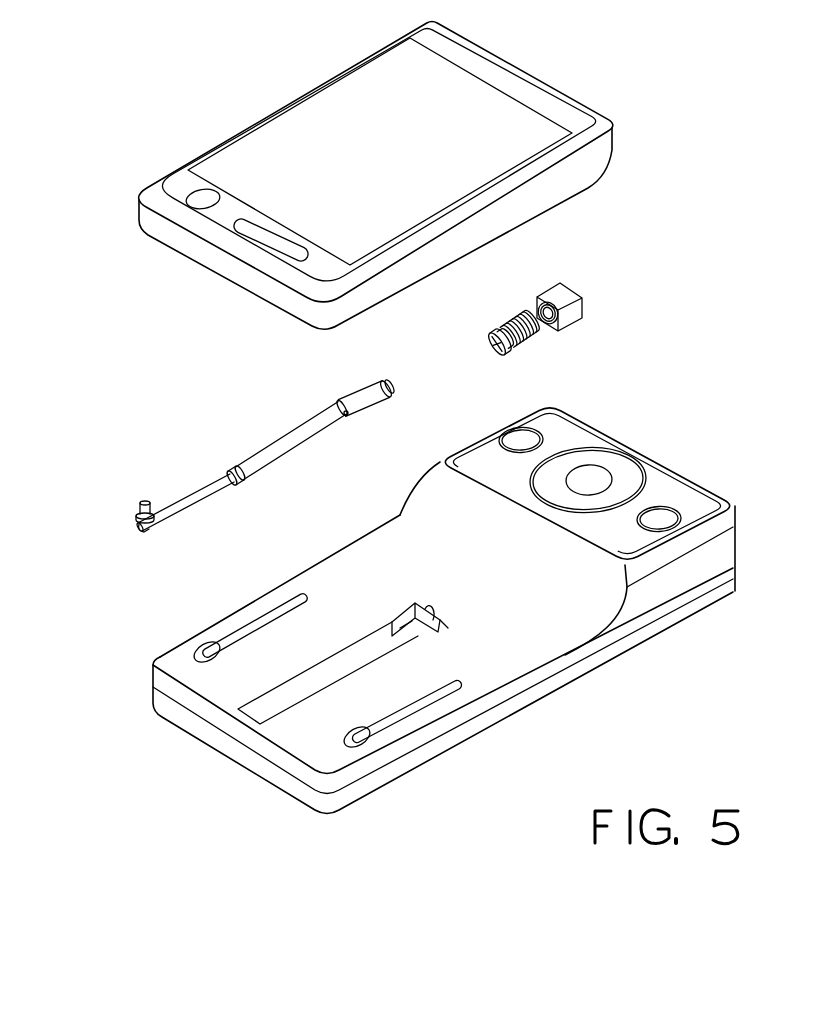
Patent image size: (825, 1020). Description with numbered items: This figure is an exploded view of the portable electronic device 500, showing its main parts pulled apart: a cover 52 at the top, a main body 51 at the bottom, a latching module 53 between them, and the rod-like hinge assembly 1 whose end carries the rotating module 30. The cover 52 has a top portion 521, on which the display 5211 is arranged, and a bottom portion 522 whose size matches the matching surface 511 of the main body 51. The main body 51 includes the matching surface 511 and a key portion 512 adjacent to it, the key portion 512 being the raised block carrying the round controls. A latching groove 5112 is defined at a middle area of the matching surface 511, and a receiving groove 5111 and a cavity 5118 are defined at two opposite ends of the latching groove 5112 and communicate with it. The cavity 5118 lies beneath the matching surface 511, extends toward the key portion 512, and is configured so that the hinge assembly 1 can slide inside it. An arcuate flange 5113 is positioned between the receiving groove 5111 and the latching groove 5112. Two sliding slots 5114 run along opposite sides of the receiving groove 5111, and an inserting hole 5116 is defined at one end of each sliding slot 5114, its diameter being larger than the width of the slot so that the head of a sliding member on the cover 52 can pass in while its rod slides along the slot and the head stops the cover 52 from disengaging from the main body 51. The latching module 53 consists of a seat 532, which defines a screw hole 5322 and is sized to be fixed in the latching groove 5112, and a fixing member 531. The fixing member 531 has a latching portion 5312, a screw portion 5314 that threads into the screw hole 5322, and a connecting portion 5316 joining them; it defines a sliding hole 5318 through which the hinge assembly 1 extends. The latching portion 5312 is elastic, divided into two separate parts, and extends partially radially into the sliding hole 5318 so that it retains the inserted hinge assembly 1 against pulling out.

The portable electronic device 500 is at (253, 55).
The cover 52 is at (680, 75).
The top portion 521 is at (560, 110).
The display 5211 is at (274, 149).
The bottom portion 522 is at (580, 198).
The latching module 53 is at (680, 278).
The fixing member 531 is at (533, 332).
The latching portion 5312 is at (488, 343).
The screw portion 5314 is at (513, 317).
The connecting portion 5316 is at (487, 333).
The sliding hole 5318 is at (489, 360).
The seat 532 is at (566, 293).
The screw hole 5322 is at (538, 311).
The stylus / rod 1 is at (255, 428).
The rotating module 30 is at (140, 512).
The main body 51 is at (672, 432).
The matching surface 511 is at (442, 556).
The key portion 512 is at (685, 497).
The receiving groove 5111 is at (368, 642).
The arcuate flange 5113 is at (387, 623).
The cavity 5118 is at (440, 618).
The latching groove 5112 is at (422, 625).
The sliding slots 5114 is at (242, 635).
The inserting hole 5116 is at (357, 740).